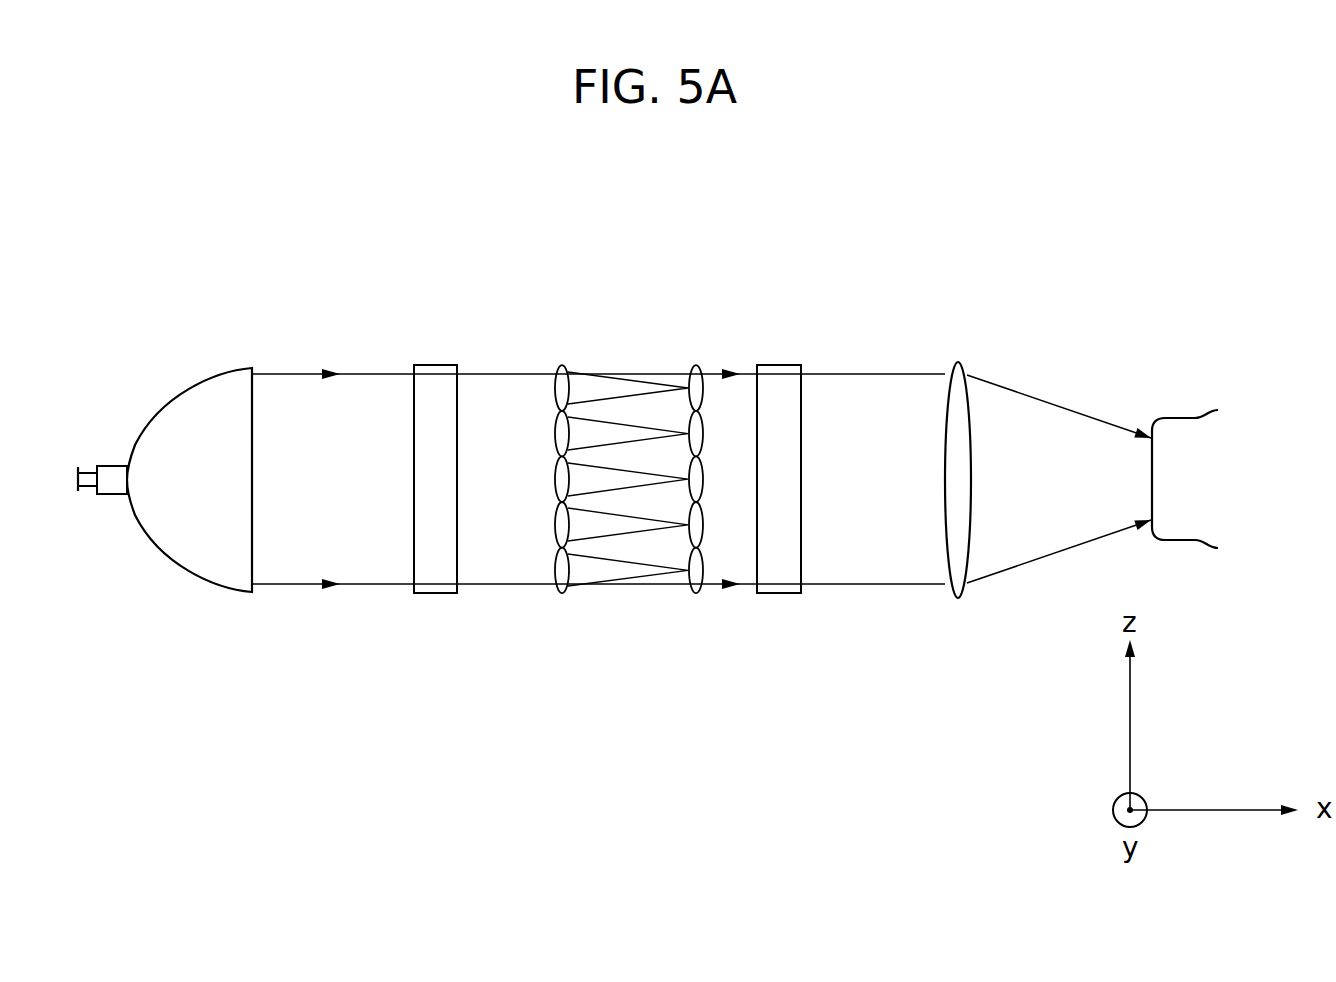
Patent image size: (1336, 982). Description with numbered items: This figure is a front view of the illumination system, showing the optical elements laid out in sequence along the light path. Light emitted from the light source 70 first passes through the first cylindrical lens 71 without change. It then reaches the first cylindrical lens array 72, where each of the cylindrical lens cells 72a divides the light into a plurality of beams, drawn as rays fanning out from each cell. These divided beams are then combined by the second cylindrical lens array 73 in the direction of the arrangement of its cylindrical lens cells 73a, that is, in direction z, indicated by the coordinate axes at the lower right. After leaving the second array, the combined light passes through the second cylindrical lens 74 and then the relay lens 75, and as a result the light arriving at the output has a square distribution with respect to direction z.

The light source 70 is at (233, 380).
The first cylindrical lens 71 is at (432, 362).
The first cylindrical lens array 72 is at (596, 463).
The cylindrical lens cell 72a is at (552, 535).
The second cylindrical lens array 73 is at (722, 463).
The cylindrical lens cell 73a is at (706, 535).
The second cylindrical lens 74 is at (782, 368).
The relay lens 75 is at (960, 362).